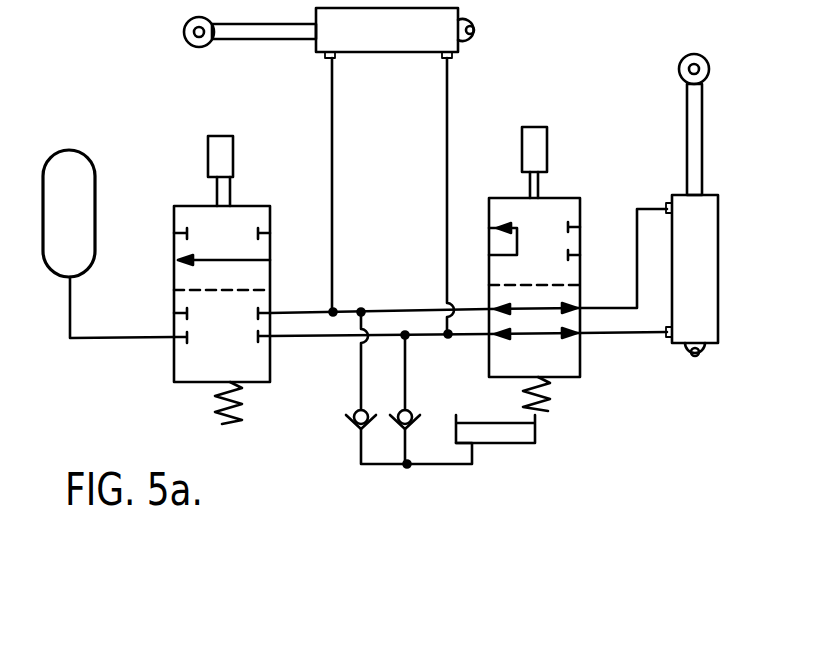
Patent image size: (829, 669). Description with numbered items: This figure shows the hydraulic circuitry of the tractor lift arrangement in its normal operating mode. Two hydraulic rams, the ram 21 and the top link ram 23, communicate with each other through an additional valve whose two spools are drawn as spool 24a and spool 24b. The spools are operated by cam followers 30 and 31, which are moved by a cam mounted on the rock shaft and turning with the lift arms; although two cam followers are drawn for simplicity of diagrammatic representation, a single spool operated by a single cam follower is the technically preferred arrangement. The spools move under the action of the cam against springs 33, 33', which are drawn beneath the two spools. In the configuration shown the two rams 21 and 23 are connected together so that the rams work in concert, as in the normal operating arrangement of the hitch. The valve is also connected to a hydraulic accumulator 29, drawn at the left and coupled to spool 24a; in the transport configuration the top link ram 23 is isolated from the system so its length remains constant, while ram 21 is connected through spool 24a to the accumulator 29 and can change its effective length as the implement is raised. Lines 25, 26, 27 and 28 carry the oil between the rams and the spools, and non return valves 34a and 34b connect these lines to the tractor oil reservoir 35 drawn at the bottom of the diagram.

The ram 21 is at (378, 53).
The top link ram 23 is at (718, 253).
The spool of valve 24 24a is at (255, 206).
The spool of valve 24 24b is at (565, 198).
The line 25 is at (332, 146).
The line 26 is at (637, 264).
The line 27 is at (447, 125).
The line 28 is at (623, 335).
The hydraulic accumulator 29 is at (96, 212).
The cam follower 30 is at (233, 148).
The cam follower 31 is at (547, 140).
The spring 33 is at (252, 403).
The spring 33' is at (563, 396).
The non return valve 34a is at (353, 428).
The non return valve 34b is at (403, 430).
The tractor oil reservoir 35 is at (510, 443).